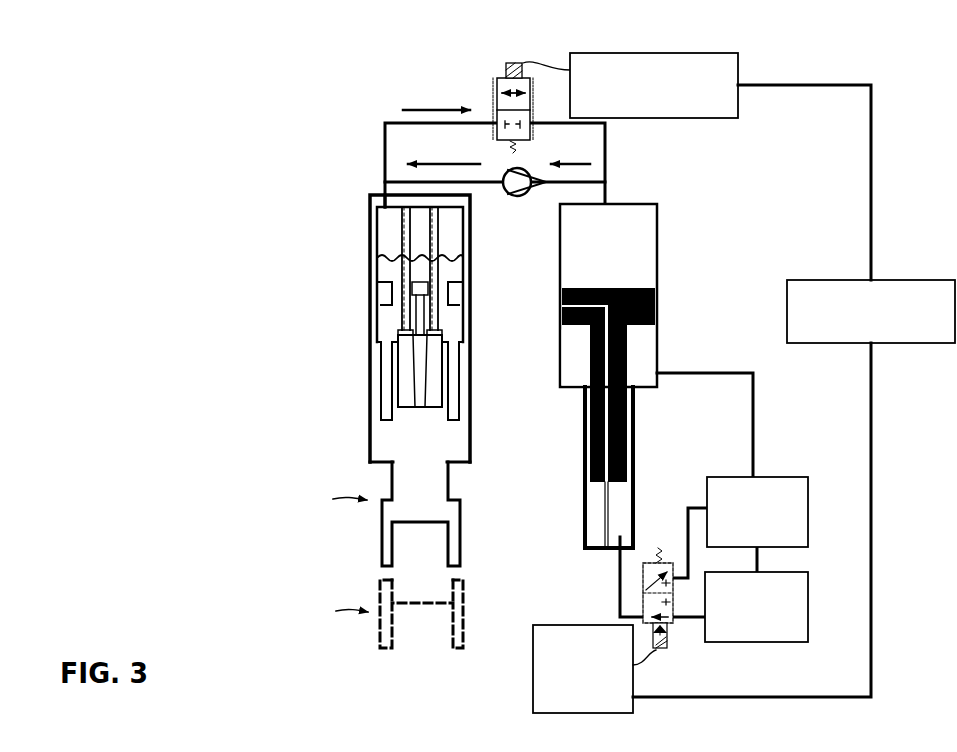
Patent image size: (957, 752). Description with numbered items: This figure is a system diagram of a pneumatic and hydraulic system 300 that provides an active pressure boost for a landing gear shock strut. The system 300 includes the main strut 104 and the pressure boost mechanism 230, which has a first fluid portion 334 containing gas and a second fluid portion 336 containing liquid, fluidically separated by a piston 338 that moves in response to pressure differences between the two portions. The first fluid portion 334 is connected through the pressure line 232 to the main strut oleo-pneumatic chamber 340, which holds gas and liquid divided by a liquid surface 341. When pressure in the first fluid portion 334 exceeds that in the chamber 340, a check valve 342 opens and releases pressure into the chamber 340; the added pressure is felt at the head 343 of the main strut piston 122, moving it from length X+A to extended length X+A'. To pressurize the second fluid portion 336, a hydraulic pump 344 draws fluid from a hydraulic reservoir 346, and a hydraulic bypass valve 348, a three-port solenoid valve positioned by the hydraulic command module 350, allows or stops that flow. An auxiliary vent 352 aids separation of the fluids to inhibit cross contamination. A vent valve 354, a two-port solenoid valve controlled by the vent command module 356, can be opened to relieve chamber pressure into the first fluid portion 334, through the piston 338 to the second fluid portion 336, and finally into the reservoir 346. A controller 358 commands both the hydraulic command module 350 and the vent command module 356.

The pneumatic and hydraulic system 300 is at (277, 221).
The main strut 104 is at (341, 342).
The main strut piston 122 is at (452, 496).
The pressure boost mechanism 230 is at (658, 234).
The pressure line 232 is at (623, 168).
The first fluid portion 334 is at (623, 216).
The second fluid portion 336 is at (578, 336).
The piston 338 is at (614, 287).
The main strut oleo-pneumatic chamber 340 is at (382, 227).
The liquid surface 341 is at (458, 254).
The check valve 342 is at (526, 198).
The head 343 is at (378, 280).
The hydraulic pump 344 is at (756, 607).
The hydraulic reservoir 346 is at (757, 512).
The hydraulic bypass valve 348 is at (671, 624).
The hydraulic command module 350 is at (594, 669).
The auxiliary vent 352 is at (604, 552).
The vent valve 354 is at (500, 70).
The vent command module 356 is at (654, 85).
The controller 358 is at (794, 391).